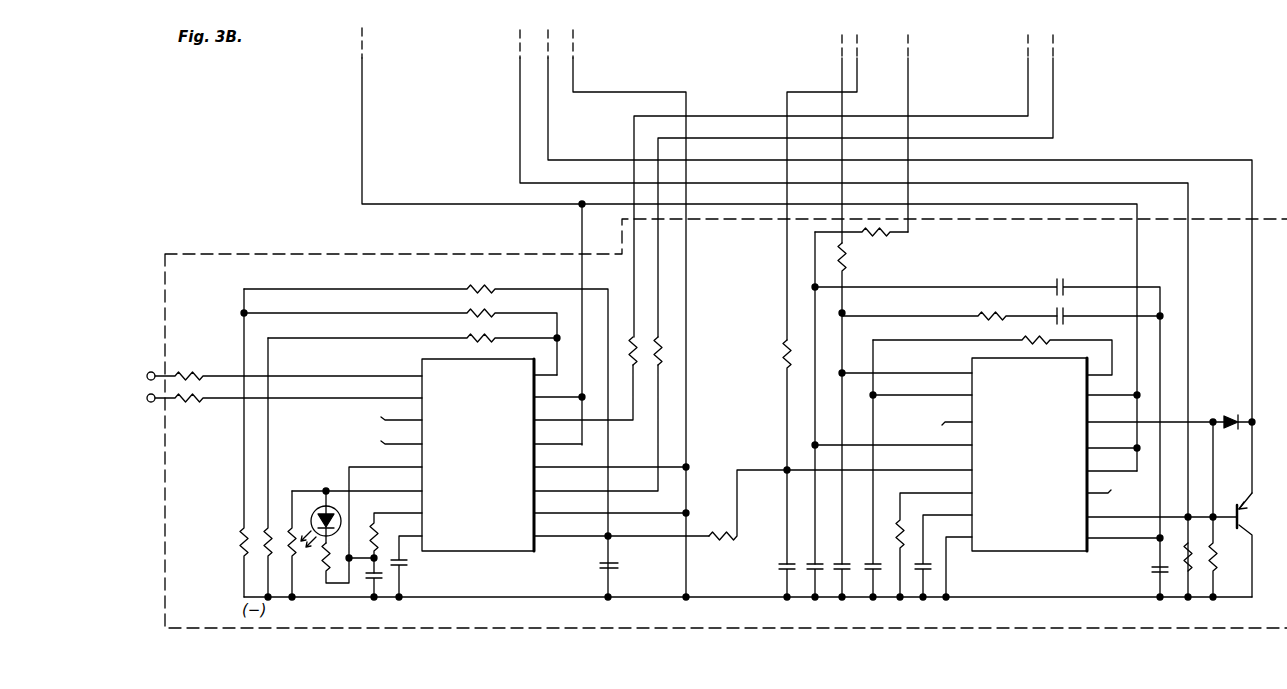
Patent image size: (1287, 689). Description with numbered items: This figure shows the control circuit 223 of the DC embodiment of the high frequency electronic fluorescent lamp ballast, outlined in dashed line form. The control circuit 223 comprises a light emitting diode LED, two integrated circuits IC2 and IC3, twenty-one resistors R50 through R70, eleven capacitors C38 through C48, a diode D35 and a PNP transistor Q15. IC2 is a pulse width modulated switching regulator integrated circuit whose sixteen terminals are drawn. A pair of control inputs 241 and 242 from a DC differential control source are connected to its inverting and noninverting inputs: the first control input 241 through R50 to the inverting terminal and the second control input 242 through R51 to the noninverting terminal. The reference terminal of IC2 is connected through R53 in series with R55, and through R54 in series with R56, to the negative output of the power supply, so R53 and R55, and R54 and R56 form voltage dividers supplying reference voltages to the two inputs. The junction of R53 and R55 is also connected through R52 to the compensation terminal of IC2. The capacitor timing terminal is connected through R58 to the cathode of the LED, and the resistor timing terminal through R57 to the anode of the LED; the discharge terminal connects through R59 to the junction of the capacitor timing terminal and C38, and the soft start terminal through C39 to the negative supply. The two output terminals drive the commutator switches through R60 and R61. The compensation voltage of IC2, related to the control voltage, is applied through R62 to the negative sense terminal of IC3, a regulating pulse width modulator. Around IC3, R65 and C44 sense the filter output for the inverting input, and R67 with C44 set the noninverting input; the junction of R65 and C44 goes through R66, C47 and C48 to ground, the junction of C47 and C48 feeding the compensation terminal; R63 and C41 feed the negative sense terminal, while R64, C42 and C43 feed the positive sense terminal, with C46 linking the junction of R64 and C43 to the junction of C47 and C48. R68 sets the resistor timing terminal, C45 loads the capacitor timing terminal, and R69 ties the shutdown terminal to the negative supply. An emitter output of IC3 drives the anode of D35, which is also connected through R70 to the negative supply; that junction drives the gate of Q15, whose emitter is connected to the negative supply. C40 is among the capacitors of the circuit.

The control circuit 223 is at (688, 618).
The first control input 241 is at (148, 374).
The second control input 242 is at (148, 402).
The resistor R50 is at (288, 364).
The resistor R51 is at (288, 408).
The resistor R52 is at (426, 430).
The resistor R53 is at (399, 334).
The resistor R54 is at (414, 330).
The resistor R55 is at (220, 443).
The resistor R56 is at (265, 528).
The resistor R57 is at (290, 528).
The resistor R58 is at (320, 565).
The resistor R59 is at (374, 524).
The resistor R60 is at (660, 345).
The resistor R61 is at (635, 368).
The resistor R62 is at (835, 503).
The resistor R63 is at (762, 452).
The resistor R64 is at (879, 241).
The resistor R65 is at (863, 403).
The resistor R66 is at (949, 305).
The resistor R67 is at (1025, 337).
The resistor R68 is at (898, 520).
The resistor R69 is at (1192, 567).
The resistor R70 is at (1216, 568).
The capacitor C38 is at (381, 584).
The capacitor C39 is at (414, 568).
The capacitor C40 is at (626, 569).
The capacitor C41 is at (782, 571).
The capacitor C42 is at (812, 572).
The capacitor C43 is at (840, 572).
The capacitor C44 is at (876, 574).
The capacitor C45 is at (930, 567).
The capacitor C46 is at (989, 429).
The capacitor C47 is at (1108, 308).
The capacitor C48 is at (1136, 570).
The pulse width modulated switching regulator integrated circuit IC2 is at (480, 548).
The regulating pulse width modulator integrated circuit IC3 is at (1035, 543).
The light emitting diode LED is at (332, 497).
The diode D35 is at (1231, 411).
The PNP transistor Q15 is at (1259, 545).